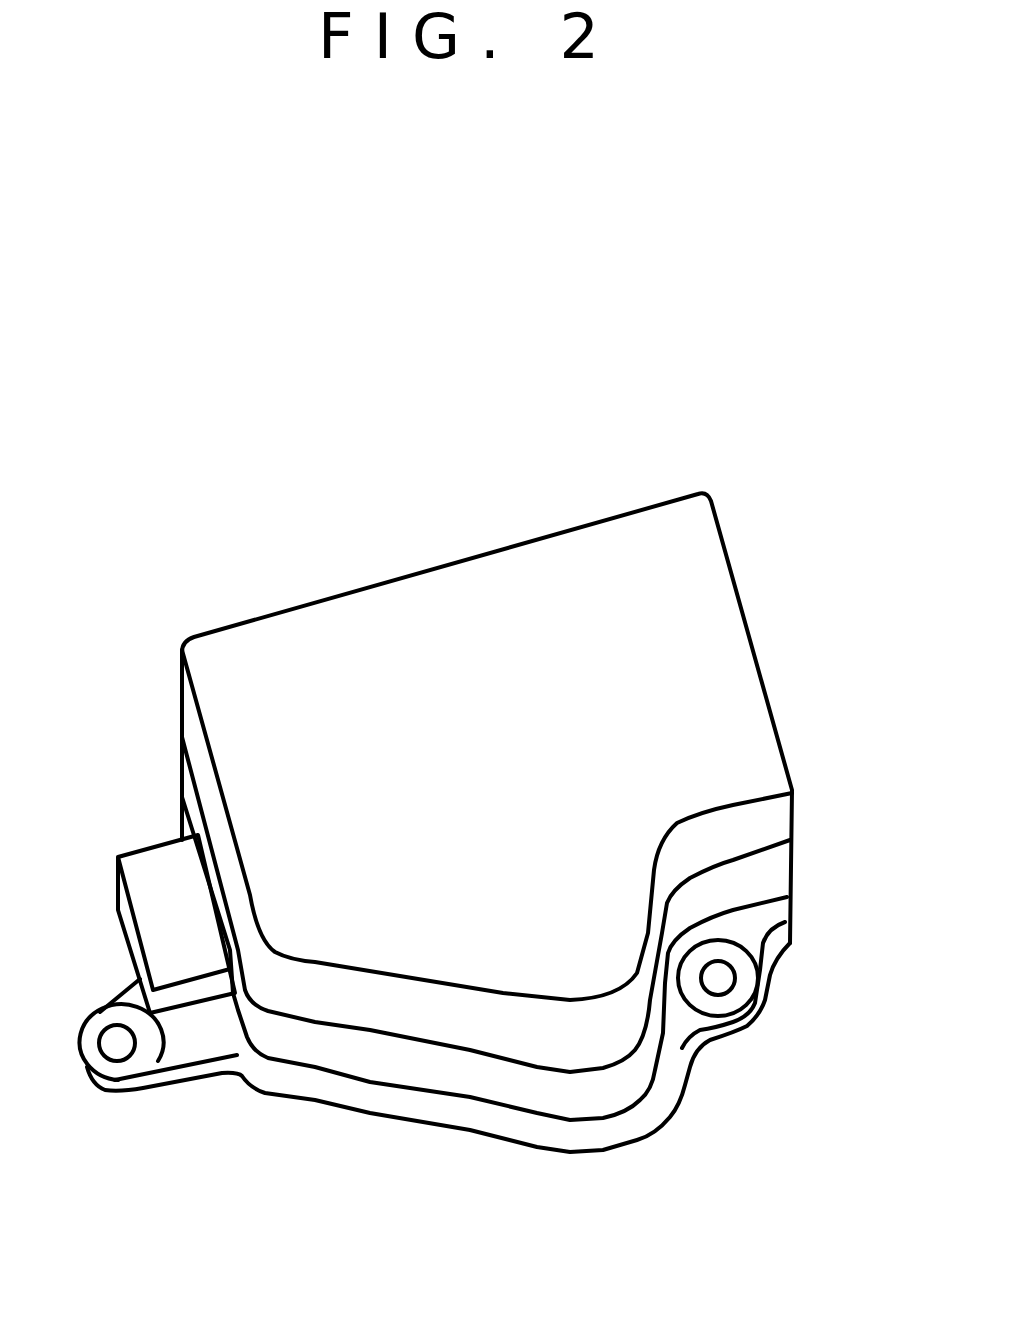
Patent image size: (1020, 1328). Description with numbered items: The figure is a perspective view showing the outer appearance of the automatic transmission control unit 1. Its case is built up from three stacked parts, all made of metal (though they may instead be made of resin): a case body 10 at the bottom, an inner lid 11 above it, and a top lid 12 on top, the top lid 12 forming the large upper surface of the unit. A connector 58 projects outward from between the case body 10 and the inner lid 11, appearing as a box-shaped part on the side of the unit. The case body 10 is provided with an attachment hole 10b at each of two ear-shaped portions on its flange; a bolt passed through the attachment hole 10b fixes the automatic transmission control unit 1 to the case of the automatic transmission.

The automatic transmission control unit 1 is at (555, 480).
The case body 10 is at (660, 1105).
The attachment hole 10b is at (730, 992).
The inner lid 11 is at (750, 880).
The top lid 12 is at (747, 830).
The connector 58 is at (153, 878).